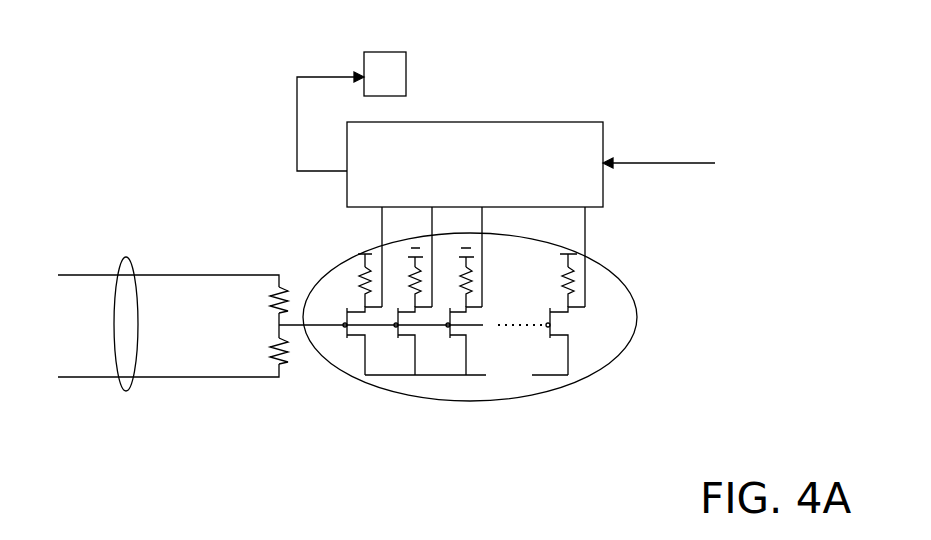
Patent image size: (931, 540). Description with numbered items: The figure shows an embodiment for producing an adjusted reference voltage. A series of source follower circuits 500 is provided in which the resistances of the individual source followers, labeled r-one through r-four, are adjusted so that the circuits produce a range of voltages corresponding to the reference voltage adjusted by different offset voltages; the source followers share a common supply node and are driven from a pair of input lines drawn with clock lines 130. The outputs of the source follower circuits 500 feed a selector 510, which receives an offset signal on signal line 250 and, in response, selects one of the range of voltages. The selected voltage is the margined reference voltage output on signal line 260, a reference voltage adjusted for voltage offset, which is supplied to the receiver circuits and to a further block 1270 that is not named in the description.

The controller 1270 is at (389, 52).
The signal line 260 is at (297, 137).
The selector 510 is at (557, 122).
The signal line 250 is at (645, 163).
The clock lines 130 is at (126, 392).
The source follower circuits 500 is at (525, 395).